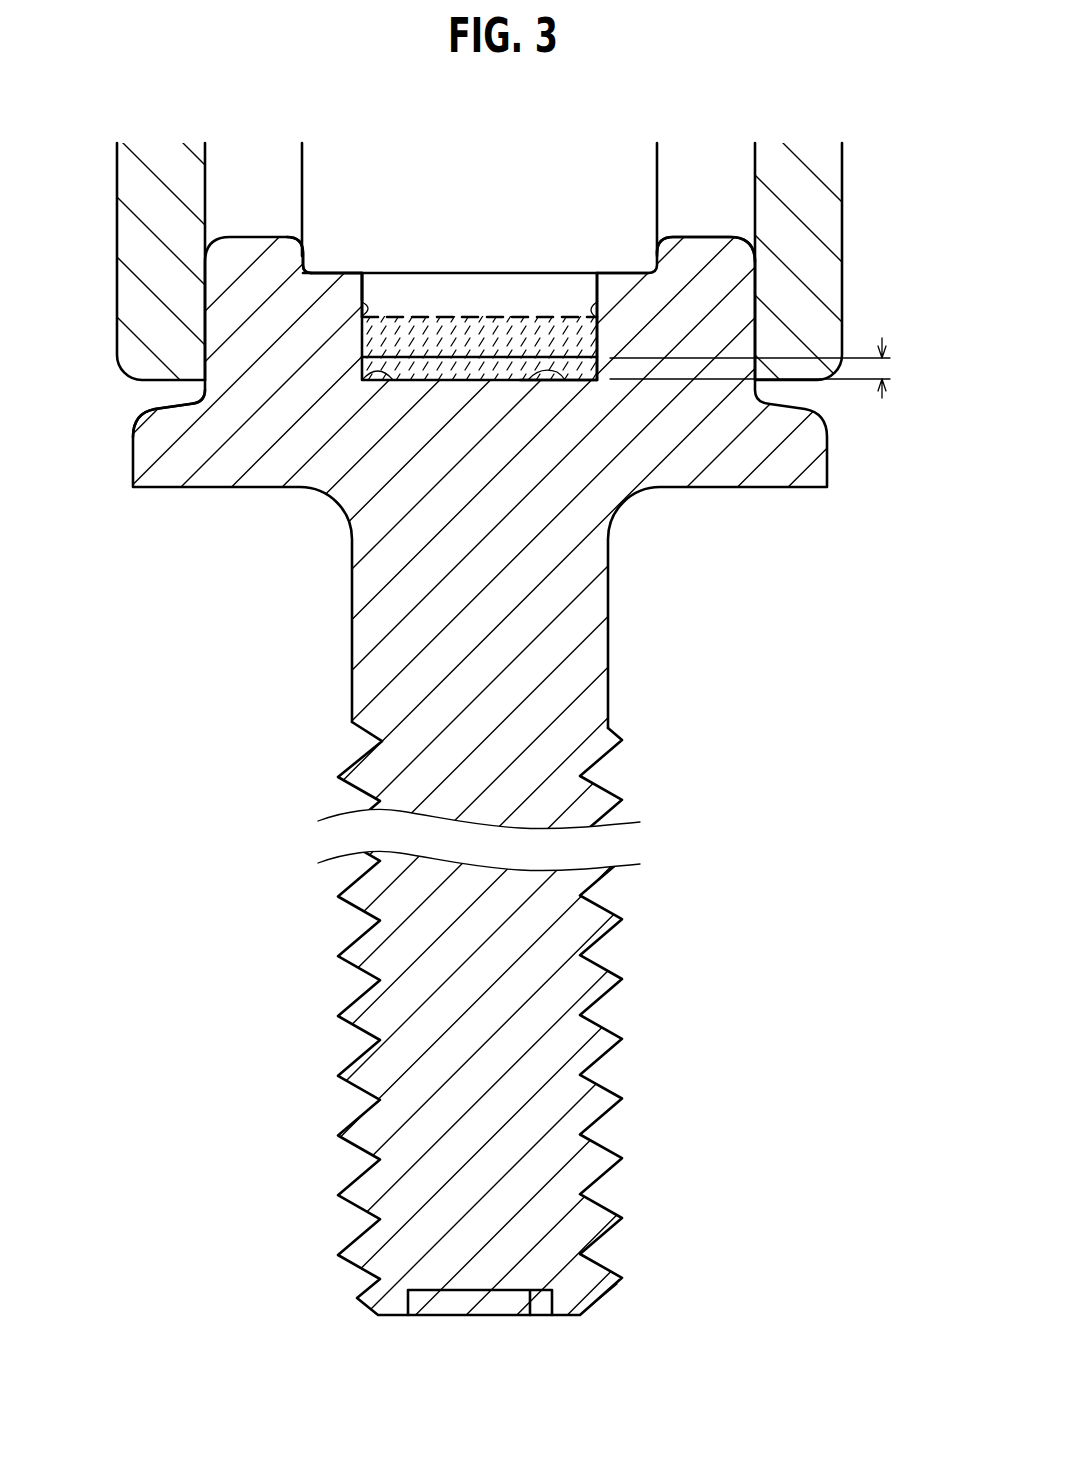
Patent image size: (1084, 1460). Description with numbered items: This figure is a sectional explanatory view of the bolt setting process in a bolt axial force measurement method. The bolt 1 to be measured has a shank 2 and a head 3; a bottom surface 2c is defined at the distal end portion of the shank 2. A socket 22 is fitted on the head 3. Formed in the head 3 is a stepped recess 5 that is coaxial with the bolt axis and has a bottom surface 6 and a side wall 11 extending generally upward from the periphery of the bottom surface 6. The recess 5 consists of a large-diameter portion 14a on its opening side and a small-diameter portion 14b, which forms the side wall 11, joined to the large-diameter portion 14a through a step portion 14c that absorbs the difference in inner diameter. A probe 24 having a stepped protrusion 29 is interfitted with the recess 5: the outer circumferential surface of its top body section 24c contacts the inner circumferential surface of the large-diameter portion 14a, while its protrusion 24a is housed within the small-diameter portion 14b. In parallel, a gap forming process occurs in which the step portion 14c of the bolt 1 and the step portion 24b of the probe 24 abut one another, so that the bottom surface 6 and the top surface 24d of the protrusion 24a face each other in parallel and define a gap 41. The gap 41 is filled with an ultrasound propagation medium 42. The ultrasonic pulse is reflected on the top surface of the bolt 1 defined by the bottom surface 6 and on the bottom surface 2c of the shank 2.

The bolt 1 is at (742, 512).
The shank 2 is at (578, 933).
The bottom surface 2c is at (527, 1292).
The head 3 is at (253, 321).
The recess 5 is at (355, 375).
The bottom surface 6 is at (562, 384).
The side wall 11 is at (330, 300).
The large-diameter portion 14a is at (657, 255).
The small-diameter portion 14b is at (593, 327).
The step portion 14c is at (248, 370).
The socket 22 is at (124, 297).
The probe 24 is at (350, 210).
The protrusion 24a is at (422, 300).
The step portion 24b is at (600, 274).
The top body section 24c is at (550, 255).
The top surface 24d is at (489, 361).
The stepped protrusion 29 is at (447, 258).
The gap 41 is at (888, 371).
The ultrasound propagation medium 42 is at (420, 383).